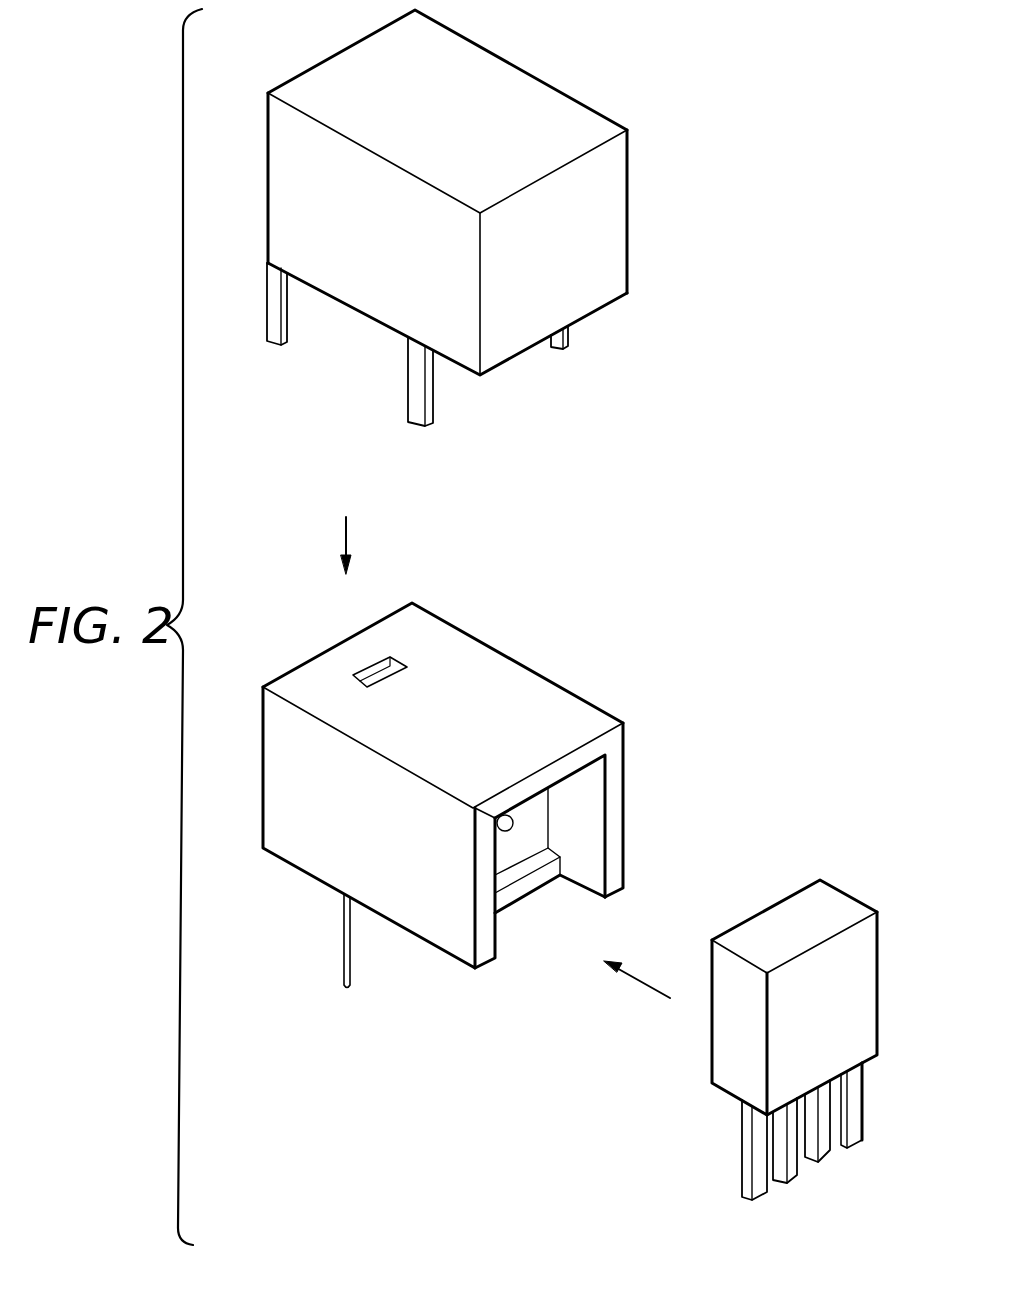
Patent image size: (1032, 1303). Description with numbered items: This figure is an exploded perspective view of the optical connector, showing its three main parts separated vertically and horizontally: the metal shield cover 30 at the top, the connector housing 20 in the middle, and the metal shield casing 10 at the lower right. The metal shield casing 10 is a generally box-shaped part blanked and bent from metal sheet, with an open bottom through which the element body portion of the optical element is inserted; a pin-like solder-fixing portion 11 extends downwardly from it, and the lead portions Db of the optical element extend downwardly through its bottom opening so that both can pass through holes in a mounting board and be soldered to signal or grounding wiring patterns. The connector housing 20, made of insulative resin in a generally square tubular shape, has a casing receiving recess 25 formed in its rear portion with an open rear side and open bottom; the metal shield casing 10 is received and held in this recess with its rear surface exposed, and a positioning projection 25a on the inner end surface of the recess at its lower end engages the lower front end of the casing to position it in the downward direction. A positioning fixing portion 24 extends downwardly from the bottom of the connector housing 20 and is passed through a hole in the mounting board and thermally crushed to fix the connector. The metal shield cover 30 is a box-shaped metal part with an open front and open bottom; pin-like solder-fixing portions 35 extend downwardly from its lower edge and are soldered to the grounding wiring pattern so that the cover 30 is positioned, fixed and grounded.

The metal shield cover 30 is at (505, 87).
The solder-fixing portions 35 is at (270, 346).
The connector housing 20 is at (516, 663).
The casing receiving recess 25 is at (593, 803).
The positioning projection 25a is at (528, 895).
The positioning fixing portion 24 is at (352, 967).
The metal shield casing 10 is at (838, 903).
The solder-fixing portion 11 is at (863, 1112).
The lead portions Db is at (758, 1200).